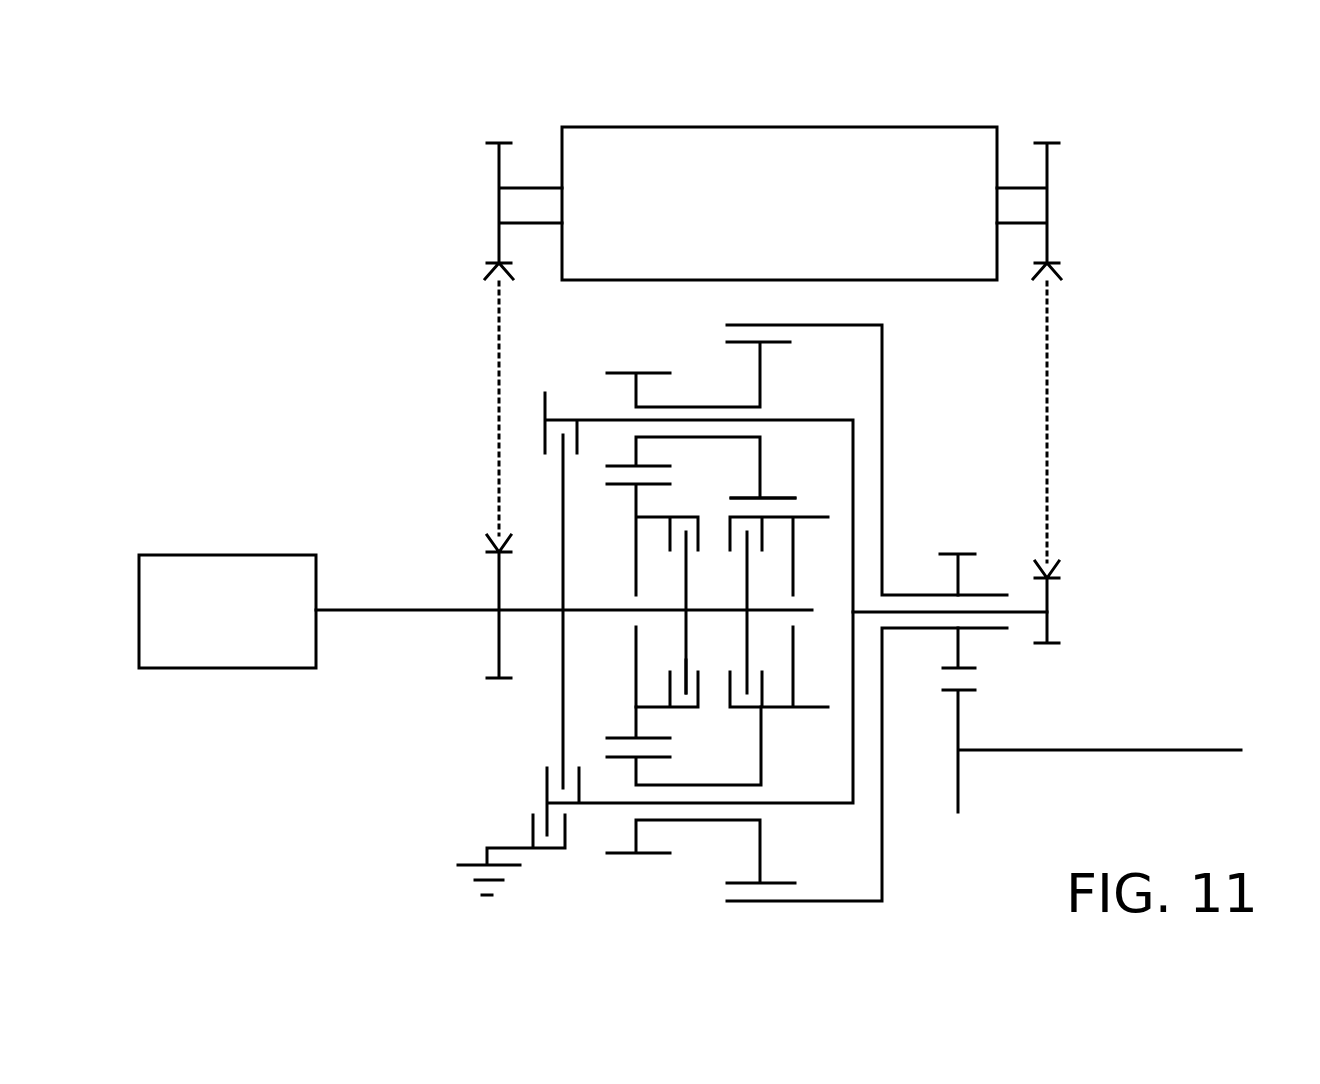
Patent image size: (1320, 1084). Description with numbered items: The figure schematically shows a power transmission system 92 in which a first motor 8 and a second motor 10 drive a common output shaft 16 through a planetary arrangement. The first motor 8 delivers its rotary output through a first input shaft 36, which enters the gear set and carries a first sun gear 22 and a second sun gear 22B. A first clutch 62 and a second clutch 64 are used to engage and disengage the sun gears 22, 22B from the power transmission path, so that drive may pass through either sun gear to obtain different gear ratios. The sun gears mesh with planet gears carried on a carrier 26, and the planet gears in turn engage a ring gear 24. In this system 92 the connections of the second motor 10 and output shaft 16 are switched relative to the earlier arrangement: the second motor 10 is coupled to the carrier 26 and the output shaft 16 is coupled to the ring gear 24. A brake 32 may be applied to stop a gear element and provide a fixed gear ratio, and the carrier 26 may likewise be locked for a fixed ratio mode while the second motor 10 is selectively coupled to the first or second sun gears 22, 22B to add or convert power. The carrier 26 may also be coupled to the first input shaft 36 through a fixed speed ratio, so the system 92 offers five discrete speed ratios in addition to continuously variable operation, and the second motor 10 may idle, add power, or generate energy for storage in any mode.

The second motor 10 is at (767, 140).
The first motor 8 is at (216, 575).
The first input shaft 36 is at (411, 608).
The system 92 is at (1142, 345).
The ring gear 24 is at (882, 368).
The carrier 26 is at (855, 492).
The first clutch 62 is at (748, 505).
The second clutch 64 is at (681, 707).
The second sun gear 22B is at (642, 685).
The first sun gear 22 is at (795, 682).
The brake 32 is at (537, 852).
The output shaft 16 is at (1121, 750).